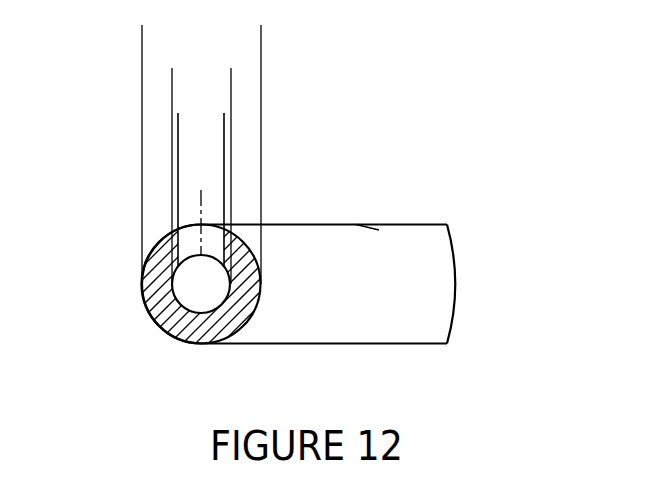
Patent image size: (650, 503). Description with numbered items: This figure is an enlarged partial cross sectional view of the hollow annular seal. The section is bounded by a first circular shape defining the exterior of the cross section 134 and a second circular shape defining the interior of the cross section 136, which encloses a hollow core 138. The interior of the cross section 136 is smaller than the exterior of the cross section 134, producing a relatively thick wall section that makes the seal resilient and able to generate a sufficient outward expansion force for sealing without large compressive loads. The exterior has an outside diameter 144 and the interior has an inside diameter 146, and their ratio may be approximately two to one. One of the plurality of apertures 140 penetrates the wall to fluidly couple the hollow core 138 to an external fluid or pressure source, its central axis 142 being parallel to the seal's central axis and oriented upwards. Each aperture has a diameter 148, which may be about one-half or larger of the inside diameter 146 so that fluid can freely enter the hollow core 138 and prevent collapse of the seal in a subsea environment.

The exterior of the cross section 134 is at (245, 296).
The interior of the cross section 136 is at (125, 336).
The hollow core 138 is at (140, 287).
The plurality of apertures 140 is at (282, 228).
The central axis 142 is at (125, 198).
The outside diameter 144 is at (261, 30).
The inside diameter 146 is at (231, 73).
The diameter 148 is at (224, 118).